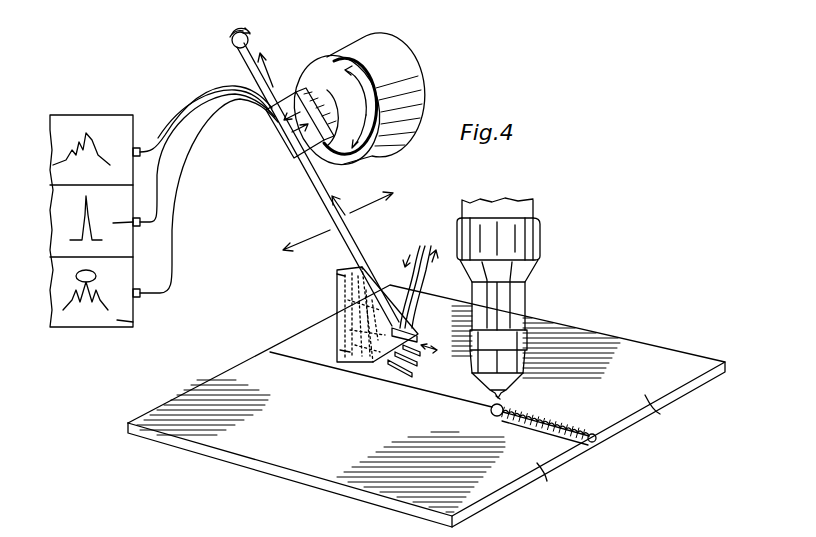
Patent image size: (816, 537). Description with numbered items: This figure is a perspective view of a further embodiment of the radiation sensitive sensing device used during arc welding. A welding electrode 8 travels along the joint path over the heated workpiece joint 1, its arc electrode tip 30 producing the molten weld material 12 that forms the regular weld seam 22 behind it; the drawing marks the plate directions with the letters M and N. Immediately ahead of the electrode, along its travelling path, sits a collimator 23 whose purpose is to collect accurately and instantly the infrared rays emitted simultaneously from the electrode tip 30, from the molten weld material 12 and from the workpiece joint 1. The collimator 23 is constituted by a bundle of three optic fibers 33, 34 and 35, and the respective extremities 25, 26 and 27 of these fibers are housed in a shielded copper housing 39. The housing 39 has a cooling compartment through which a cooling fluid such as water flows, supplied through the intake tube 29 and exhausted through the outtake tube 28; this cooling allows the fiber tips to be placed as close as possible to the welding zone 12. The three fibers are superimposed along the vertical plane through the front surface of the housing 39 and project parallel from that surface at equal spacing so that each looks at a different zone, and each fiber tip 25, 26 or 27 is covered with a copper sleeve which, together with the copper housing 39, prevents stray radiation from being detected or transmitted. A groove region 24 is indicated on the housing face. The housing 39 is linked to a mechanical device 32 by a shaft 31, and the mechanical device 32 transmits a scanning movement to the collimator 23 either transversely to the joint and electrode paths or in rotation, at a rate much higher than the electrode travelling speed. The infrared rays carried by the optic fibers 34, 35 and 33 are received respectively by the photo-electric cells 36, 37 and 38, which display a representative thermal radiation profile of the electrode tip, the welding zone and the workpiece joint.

The heated workpiece joint 1 is at (592, 438).
The welding electrode 8 is at (512, 300).
The molten weld material 12 is at (499, 417).
The weld seam 22 is at (567, 424).
The collimator 23 is at (324, 303).
The groove 24 is at (350, 352).
The optic fiber extremity 25 is at (403, 368).
The optic fiber extremity 26 is at (417, 363).
The optic fiber extremity 27 is at (430, 353).
The outtake tube 28 is at (412, 297).
The intake tube 29 is at (412, 272).
The arc electrode tip 30 is at (502, 393).
The shaft 31 is at (333, 200).
The mechanical device 32 is at (293, 130).
The optic fiber 33 is at (187, 97).
The optic fiber 34 is at (157, 282).
The optic fiber 35 is at (173, 127).
The photo-electric cell 36 is at (117, 320).
The photo-electric cell 37 is at (113, 223).
The photo-electric cell 38 is at (80, 123).
The shielded copper housing 39 is at (338, 278).
The platform edge M is at (547, 484).
The platform edge N is at (665, 418).